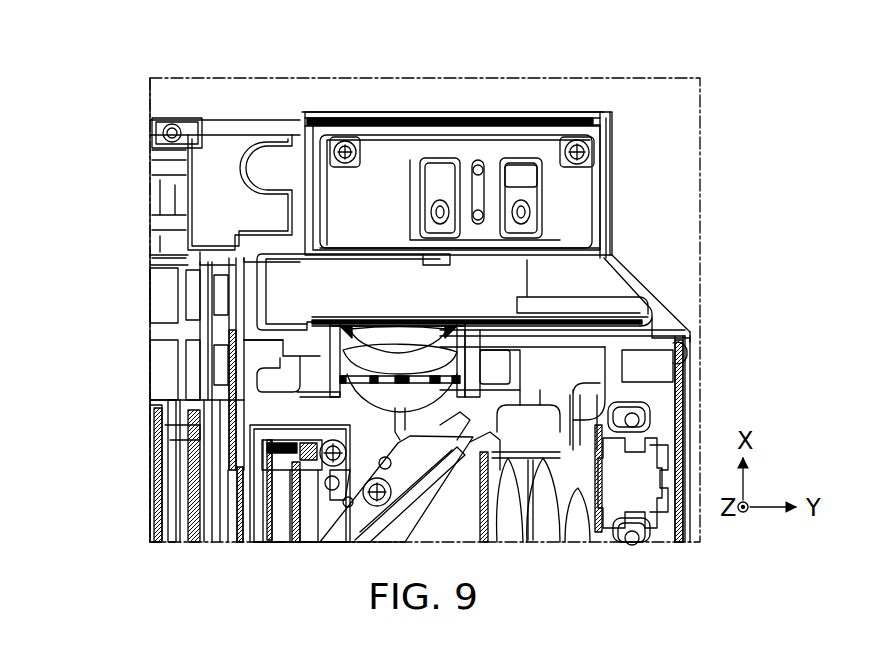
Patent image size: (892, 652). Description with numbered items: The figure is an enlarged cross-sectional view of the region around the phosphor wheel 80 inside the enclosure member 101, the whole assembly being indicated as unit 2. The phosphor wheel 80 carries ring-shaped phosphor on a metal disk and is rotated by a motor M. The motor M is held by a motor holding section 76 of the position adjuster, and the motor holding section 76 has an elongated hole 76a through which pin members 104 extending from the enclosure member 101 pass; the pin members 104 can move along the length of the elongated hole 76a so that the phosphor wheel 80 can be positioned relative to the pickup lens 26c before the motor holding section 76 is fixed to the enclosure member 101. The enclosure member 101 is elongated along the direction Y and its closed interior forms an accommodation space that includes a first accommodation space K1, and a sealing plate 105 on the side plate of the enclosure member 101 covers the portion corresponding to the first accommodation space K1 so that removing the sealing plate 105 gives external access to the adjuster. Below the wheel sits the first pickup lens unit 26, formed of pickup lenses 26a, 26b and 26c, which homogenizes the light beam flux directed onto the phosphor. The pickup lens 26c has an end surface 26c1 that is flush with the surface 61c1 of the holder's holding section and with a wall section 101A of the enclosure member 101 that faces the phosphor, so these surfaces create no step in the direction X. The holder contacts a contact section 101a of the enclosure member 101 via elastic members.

The lens barrel device 2 is at (668, 120).
The enclosure member 101 is at (365, 288).
The motor M is at (415, 288).
The sealing plate 105 is at (400, 112).
The pin members 104 is at (478, 210).
The elongated hole 76a is at (500, 126).
The first accommodation space K1 is at (600, 186).
The motor holding section 76 is at (548, 247).
The phosphor wheel 80 is at (592, 282).
The +X-side end surface 26c1 is at (610, 305).
The wall section 101A is at (310, 336).
The contact section 101a is at (312, 410).
The surface 61c1 is at (356, 318).
The pickup lens 26c is at (336, 340).
The pickup lens 26b is at (345, 372).
The pickup lens 26a is at (335, 378).
The first pickup lens unit 26 is at (245, 371).